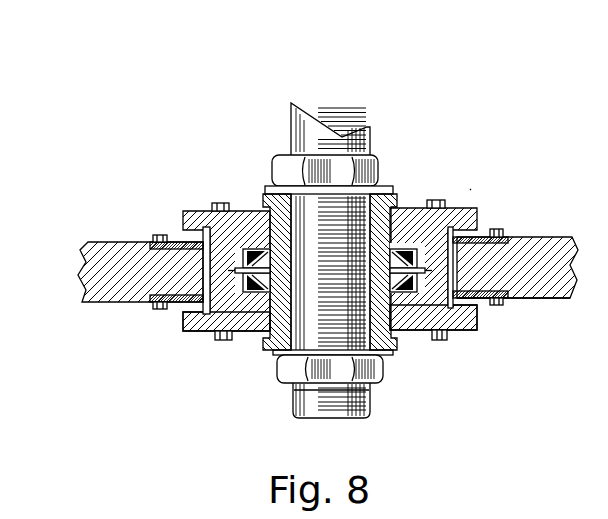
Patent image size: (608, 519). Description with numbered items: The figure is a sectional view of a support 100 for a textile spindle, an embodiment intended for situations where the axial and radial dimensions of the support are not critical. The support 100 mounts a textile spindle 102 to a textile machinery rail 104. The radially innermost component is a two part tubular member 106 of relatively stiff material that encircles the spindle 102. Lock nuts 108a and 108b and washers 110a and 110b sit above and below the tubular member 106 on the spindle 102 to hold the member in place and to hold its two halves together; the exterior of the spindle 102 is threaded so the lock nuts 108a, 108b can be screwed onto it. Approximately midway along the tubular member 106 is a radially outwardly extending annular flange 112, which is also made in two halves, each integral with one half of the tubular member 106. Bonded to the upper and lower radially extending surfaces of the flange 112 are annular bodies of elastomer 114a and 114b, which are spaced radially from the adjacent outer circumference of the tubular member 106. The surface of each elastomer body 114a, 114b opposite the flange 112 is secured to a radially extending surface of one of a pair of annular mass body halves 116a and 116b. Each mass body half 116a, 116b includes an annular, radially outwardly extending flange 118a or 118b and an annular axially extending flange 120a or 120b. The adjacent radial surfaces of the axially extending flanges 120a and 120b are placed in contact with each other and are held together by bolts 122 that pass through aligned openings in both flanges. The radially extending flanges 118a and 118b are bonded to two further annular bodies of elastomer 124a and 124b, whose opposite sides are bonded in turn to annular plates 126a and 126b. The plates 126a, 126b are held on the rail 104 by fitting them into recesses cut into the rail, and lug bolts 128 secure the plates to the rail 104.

The support 100 is at (472, 184).
The textile spindle 102 is at (314, 112).
The textile machinery rail 104 is at (88, 268).
The tubular member 106 is at (362, 398).
The lock nut 108a is at (378, 160).
The lock nut 108b is at (293, 385).
The washer 110a is at (383, 198).
The washer 110b is at (263, 352).
The annular flange 112 is at (405, 266).
The annular body of elastomer 114a is at (247, 250).
The annular body of elastomer 114b is at (401, 294).
The mass body half 116a is at (180, 204).
The mass body half 116b is at (178, 342).
The radially outwardly extending flange 118a is at (472, 215).
The radially outwardly extending flange 118b is at (470, 330).
The axially extending flange 120a is at (172, 246).
The axially extending flange 120b is at (160, 300).
The bolt 122 is at (204, 212).
The annular body of elastomer 124a is at (465, 240).
The annular body of elastomer 124b is at (470, 300).
The annular plate 126a is at (510, 240).
The annular plate 126b is at (508, 300).
The lug bolt 128 is at (158, 310).